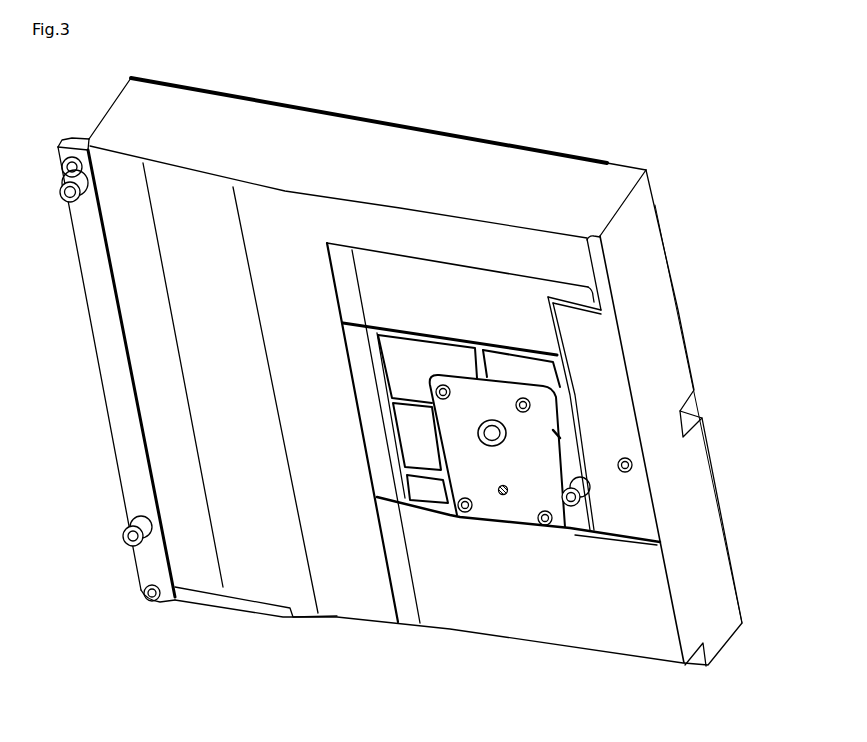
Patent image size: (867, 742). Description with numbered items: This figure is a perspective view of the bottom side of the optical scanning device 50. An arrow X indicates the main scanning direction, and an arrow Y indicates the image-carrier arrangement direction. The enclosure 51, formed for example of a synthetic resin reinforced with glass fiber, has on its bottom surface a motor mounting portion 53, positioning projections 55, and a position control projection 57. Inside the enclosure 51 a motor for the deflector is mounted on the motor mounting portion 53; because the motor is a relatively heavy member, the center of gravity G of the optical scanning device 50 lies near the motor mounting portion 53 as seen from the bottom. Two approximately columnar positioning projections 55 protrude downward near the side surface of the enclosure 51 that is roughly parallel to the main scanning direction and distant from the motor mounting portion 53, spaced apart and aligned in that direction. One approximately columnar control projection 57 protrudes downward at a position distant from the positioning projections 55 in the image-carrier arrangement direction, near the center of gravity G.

The optical scanning device 50 is at (648, 98).
The enclosure 51 is at (465, 612).
The motor mounting portion 53 is at (517, 442).
The positioning projection 55 is at (66, 202).
The position control projection 57 is at (568, 513).
The center of gravity G is at (503, 495).
The main scanning direction X is at (40, 341).
The image-carrier arrangement direction Y is at (352, 75).